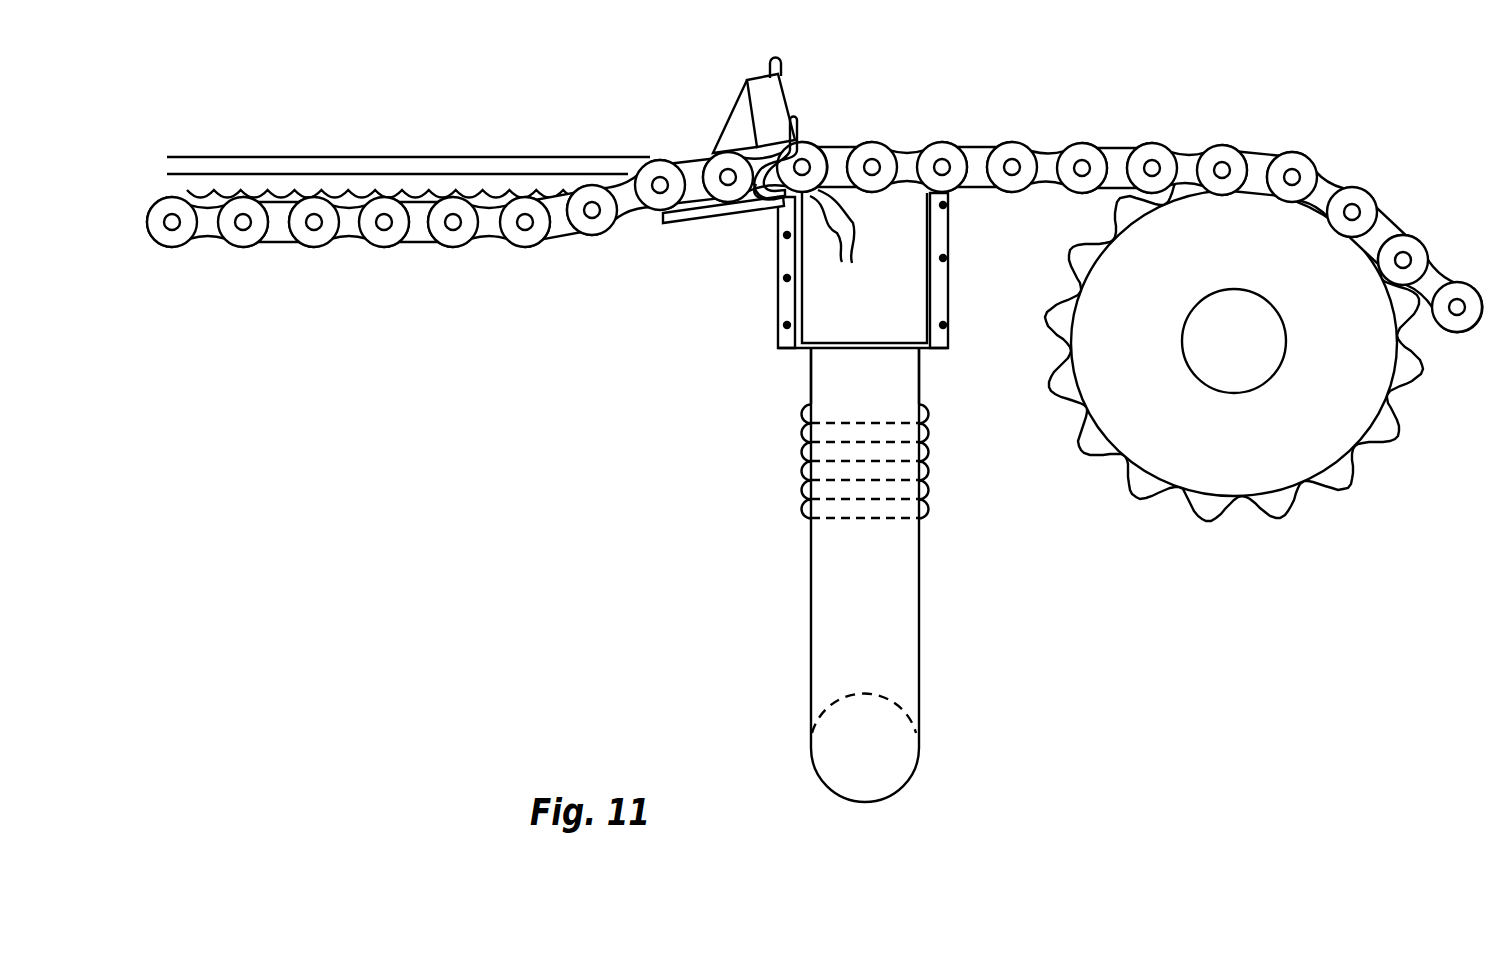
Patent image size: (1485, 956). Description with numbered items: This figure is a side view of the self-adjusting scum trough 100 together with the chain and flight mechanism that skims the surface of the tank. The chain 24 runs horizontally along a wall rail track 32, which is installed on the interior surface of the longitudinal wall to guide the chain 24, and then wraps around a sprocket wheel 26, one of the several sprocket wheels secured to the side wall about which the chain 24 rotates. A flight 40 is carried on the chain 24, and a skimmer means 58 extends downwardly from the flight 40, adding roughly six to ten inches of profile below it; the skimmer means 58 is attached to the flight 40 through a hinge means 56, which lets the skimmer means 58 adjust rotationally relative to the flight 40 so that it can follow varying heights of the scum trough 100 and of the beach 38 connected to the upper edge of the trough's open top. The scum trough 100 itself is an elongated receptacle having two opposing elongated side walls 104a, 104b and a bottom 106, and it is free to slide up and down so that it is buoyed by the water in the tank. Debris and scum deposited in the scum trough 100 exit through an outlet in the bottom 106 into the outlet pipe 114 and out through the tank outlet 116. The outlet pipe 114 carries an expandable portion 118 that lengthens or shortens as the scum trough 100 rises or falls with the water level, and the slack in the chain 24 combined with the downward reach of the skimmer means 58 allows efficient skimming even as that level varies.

The chain 24 is at (463, 232).
The sprocket wheel 26 is at (1177, 442).
The wall rail track 32 is at (328, 172).
The beach 38 is at (665, 226).
The flight 40 is at (773, 98).
The hinge means 56 is at (815, 158).
The skimmer means 58 is at (757, 202).
The self-adjusting scum trough 100 is at (785, 348).
The elongated side wall 104a is at (772, 305).
The elongated side wall 104b is at (945, 283).
The bottom 106 is at (922, 350).
The outlet pipe 114 is at (808, 562).
The tank outlet 116 is at (887, 758).
The expandable portion 118 is at (800, 468).